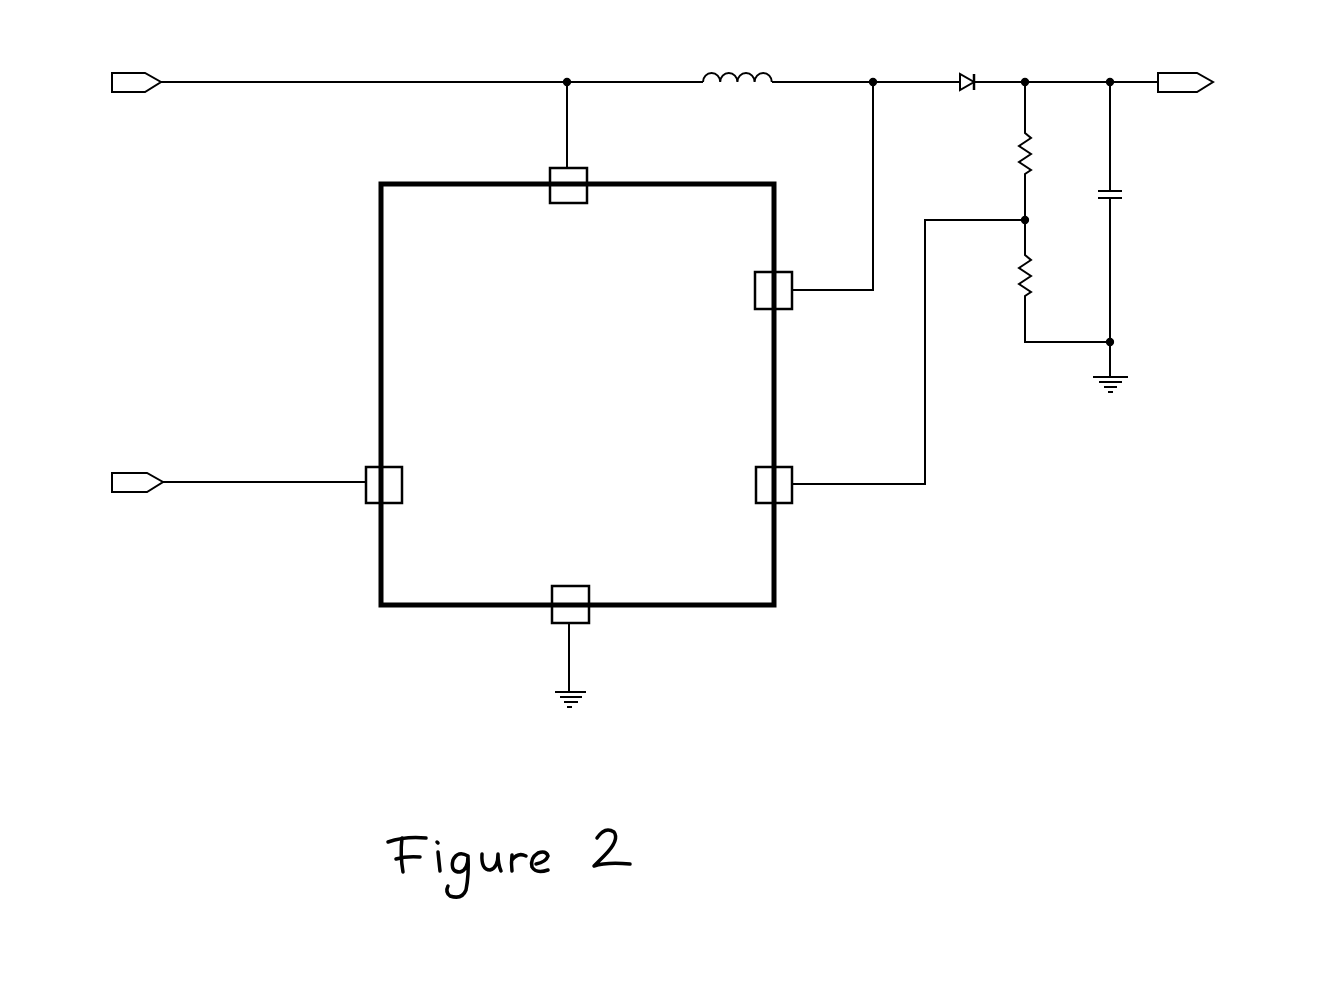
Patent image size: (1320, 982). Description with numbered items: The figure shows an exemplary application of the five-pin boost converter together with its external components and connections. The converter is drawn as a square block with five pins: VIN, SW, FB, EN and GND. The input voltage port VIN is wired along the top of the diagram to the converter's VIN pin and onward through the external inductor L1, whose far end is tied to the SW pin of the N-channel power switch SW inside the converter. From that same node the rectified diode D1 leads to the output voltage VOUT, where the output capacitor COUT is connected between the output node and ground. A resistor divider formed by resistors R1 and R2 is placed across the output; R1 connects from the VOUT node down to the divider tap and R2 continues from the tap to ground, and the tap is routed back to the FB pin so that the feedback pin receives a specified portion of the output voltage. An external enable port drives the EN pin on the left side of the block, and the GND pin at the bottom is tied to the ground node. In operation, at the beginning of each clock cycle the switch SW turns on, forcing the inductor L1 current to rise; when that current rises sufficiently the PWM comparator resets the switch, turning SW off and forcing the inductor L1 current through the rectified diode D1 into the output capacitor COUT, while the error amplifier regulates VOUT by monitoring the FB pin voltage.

The input voltage pin VIN is at (385, 137).
The inductor L1 is at (831, 68).
The rectified diode D1 is at (1059, 71).
The output voltage VOUT is at (1224, 84).
The resistor R1 is at (1044, 151).
The resistor R2 is at (1064, 280).
The output capacitor COUT is at (1134, 244).
The N-channel power MOSFET switch SW is at (814, 195).
The feedback pin FB is at (890, 361).
The enable pin EN is at (235, 468).
The ground pin GND is at (537, 653).